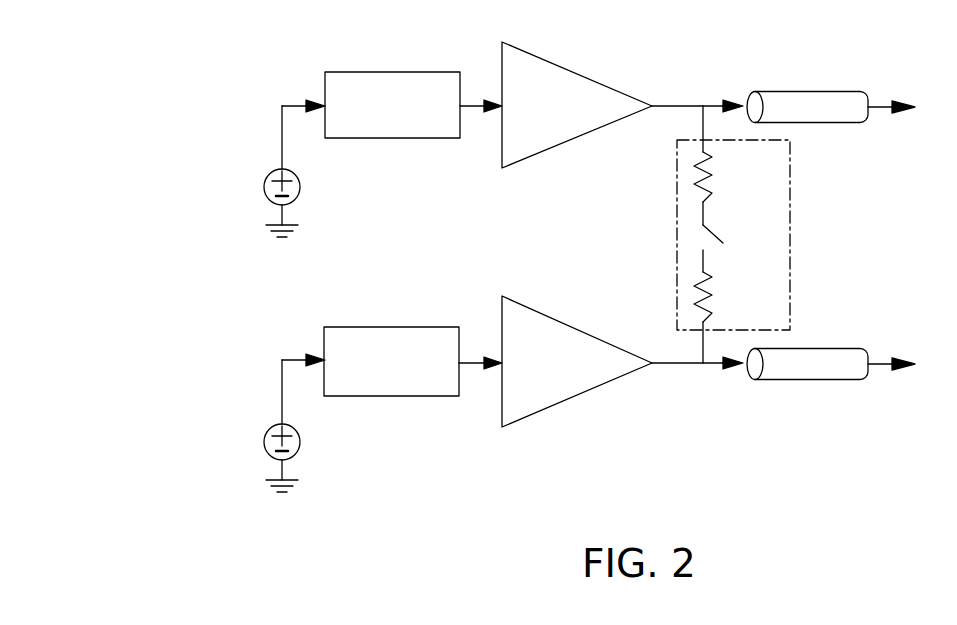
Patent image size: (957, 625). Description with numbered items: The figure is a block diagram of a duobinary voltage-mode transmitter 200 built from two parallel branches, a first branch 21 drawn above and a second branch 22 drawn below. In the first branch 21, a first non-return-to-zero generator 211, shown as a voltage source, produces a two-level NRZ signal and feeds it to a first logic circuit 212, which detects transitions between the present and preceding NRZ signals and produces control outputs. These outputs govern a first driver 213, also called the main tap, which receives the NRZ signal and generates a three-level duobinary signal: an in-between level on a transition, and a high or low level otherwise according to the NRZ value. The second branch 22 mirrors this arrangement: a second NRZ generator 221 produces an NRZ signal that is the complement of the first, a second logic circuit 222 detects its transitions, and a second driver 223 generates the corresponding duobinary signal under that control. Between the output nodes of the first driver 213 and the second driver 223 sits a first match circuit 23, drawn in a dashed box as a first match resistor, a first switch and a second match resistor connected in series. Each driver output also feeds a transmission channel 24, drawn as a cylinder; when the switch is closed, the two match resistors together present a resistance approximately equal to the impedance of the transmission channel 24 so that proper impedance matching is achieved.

The duobinary voltage-mode transmitter 200 is at (175, 47).
The first branch 21 is at (458, 146).
The first non-return-to-zero generator 211 is at (297, 176).
The first logic circuit 212 is at (390, 138).
The first driver 213 is at (556, 114).
The second branch 22 is at (458, 401).
The second non-return-to-zero generator 221 is at (297, 431).
The second logic circuit 222 is at (390, 396).
The second driver 223 is at (555, 369).
The first match circuit 23 is at (792, 219).
The transmission channel 24 is at (807, 92).